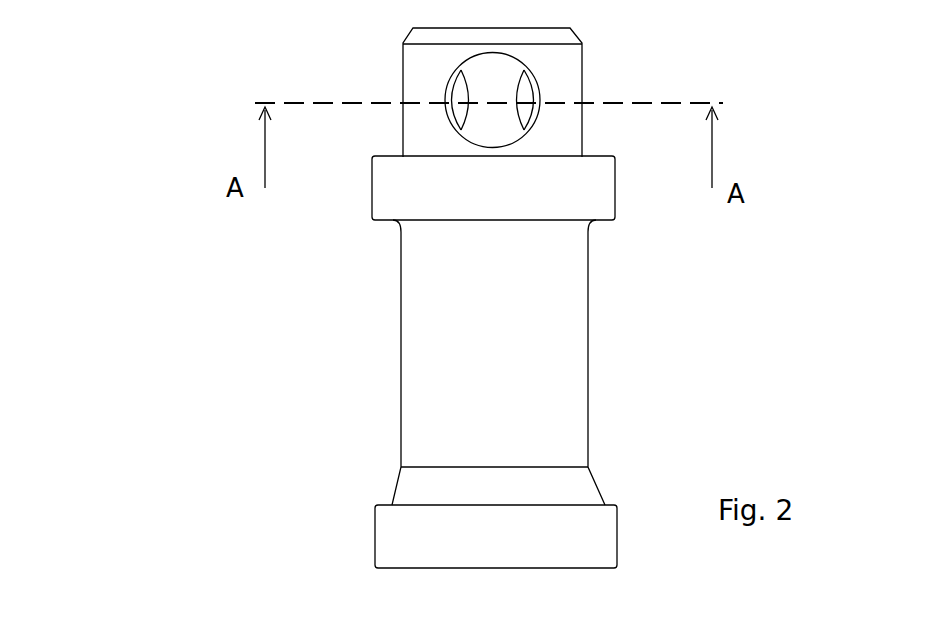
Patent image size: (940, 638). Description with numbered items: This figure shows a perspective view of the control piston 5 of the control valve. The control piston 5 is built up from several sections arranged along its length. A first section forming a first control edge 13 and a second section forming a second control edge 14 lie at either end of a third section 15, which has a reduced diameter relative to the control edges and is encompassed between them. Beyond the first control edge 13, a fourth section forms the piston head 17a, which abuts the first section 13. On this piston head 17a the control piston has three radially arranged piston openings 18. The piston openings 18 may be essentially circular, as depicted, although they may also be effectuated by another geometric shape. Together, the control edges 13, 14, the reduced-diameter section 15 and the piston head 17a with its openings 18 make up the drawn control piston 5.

The control piston 5 is at (692, 324).
The first control edge 13 is at (473, 190).
The second control edge 14 is at (485, 543).
The third section 15 is at (483, 357).
The piston head 17a is at (427, 70).
The piston openings 18 is at (497, 124).